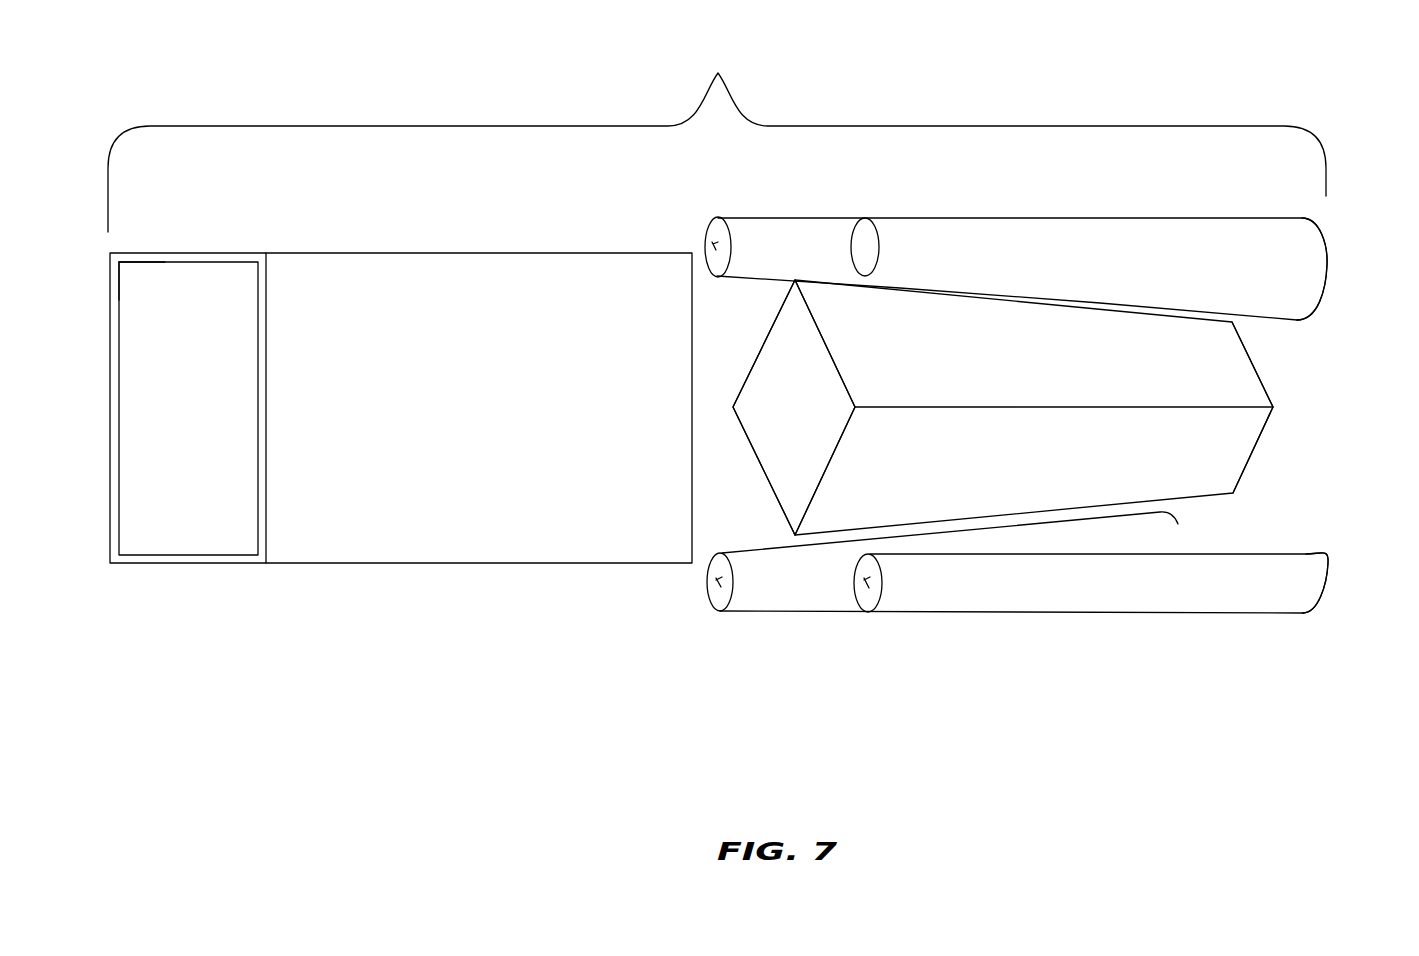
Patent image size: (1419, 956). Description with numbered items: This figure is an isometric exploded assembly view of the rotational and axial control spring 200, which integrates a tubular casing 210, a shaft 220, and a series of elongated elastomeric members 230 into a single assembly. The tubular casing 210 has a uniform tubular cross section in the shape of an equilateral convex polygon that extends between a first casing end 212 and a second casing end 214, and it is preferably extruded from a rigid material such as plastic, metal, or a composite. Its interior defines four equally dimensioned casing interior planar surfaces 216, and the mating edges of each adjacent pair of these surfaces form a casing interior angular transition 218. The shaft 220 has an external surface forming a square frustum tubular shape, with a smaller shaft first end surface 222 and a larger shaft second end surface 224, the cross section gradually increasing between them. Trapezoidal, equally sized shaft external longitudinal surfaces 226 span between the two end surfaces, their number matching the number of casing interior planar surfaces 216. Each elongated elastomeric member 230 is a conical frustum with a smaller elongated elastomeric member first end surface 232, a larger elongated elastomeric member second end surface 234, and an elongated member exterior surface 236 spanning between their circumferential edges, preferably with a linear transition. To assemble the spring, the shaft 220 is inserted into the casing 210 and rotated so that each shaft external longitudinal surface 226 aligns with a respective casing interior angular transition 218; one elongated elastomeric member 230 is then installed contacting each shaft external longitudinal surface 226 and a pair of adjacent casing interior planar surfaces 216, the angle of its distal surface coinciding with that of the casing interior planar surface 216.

The rotational and axial control spring 200 is at (717, 136).
The tubular casing 210 is at (420, 252).
The first casing end 212 is at (188, 560).
The second casing end 214 is at (692, 306).
The casing interior planar surface 216 is at (172, 412).
The casing interior angular transition 218 is at (122, 264).
The shaft 220 is at (1212, 450).
The shaft first end surface 222 is at (790, 412).
The shaft second end surface 224 is at (1264, 378).
The shaft external longitudinal surface 226 is at (1047, 462).
The elongated elastomeric member 230 is at (1197, 265).
The elongated elastomeric member first end surface 232 is at (710, 247).
The elongated elastomeric member second end surface 234 is at (1328, 264).
The elongated member exterior surface 236 is at (1165, 566).